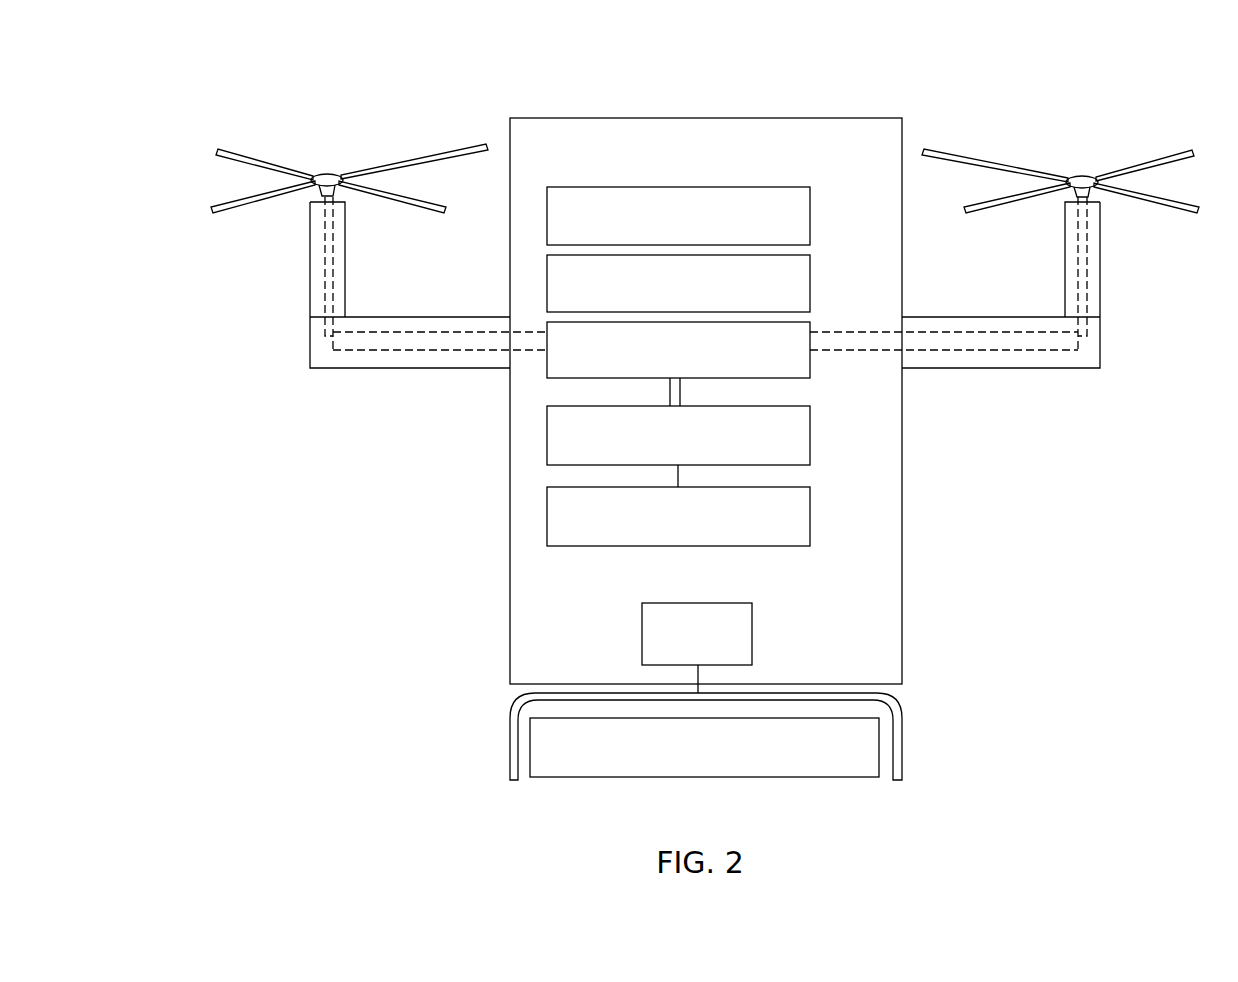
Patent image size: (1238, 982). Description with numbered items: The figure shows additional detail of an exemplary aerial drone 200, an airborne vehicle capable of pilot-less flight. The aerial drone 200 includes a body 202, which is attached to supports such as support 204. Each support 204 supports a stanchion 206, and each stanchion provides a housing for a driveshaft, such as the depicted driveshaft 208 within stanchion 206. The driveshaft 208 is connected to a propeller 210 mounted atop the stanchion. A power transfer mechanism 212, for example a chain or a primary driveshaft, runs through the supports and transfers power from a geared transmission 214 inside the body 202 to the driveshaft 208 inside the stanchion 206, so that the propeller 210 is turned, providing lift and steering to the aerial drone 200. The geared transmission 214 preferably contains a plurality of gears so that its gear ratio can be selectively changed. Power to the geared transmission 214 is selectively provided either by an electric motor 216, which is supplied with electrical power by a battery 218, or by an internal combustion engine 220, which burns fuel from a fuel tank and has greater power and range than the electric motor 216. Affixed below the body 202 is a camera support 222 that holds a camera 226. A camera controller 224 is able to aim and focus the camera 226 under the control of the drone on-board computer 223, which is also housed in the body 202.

The aerial drone 200 is at (1116, 131).
The body 202 is at (687, 173).
The support 204 is at (340, 368).
The stanchion 206 is at (310, 305).
The driveshaft 208 is at (325, 272).
The propeller 210 is at (215, 150).
The power transfer mechanism 212 is at (457, 352).
The geared transmission 214 is at (810, 362).
The electric motor 216 is at (810, 435).
The battery 218 is at (810, 517).
The internal combustion engine 220 is at (810, 284).
The camera support 222 is at (510, 748).
The drone on-board computer 223 is at (810, 217).
The camera controller 224 is at (752, 635).
The camera 226 is at (700, 777).